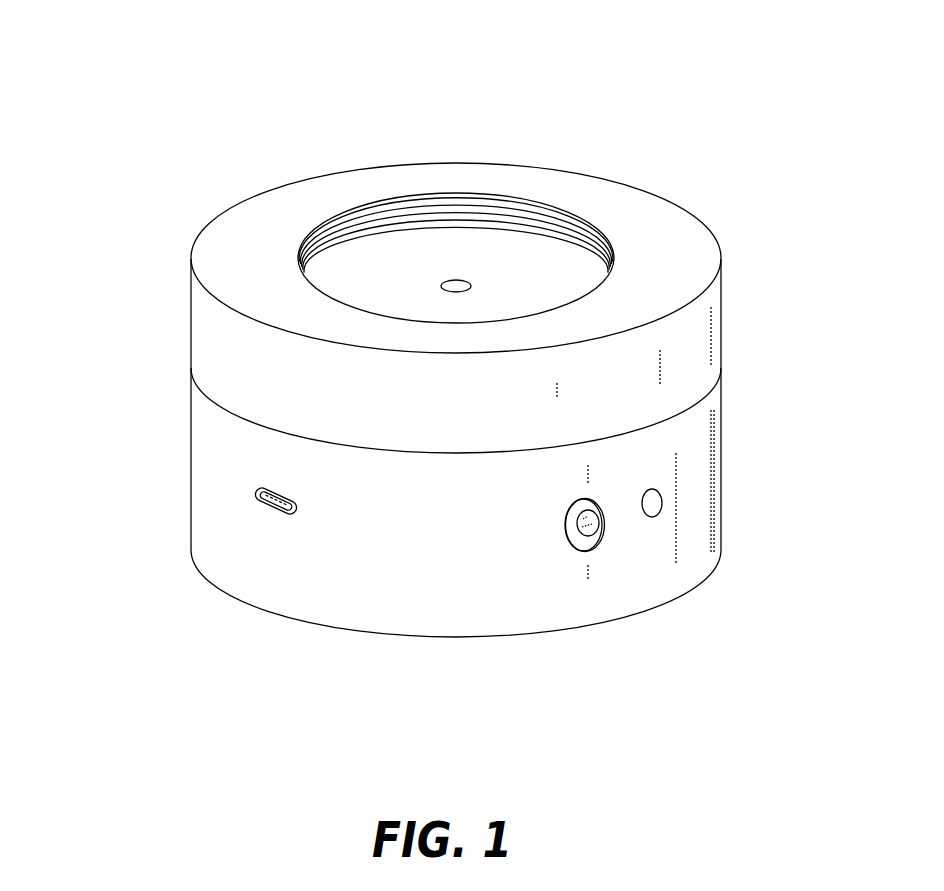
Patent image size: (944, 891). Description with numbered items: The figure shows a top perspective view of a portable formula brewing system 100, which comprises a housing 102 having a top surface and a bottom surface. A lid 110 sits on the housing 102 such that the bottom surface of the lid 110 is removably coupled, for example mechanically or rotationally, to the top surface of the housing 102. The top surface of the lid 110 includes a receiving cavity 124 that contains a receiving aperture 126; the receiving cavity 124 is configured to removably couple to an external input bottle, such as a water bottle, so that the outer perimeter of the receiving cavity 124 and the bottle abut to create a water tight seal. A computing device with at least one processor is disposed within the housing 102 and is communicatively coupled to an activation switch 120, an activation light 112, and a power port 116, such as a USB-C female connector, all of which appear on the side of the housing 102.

The device 100 is at (155, 66).
The lower housing portion 102 is at (212, 448).
The upper housing portion 110 is at (213, 324).
The indicator hole 112 is at (656, 501).
The USB port 116 is at (262, 498).
The button 120 is at (592, 523).
The threaded bore 124 is at (333, 240).
The center hole 126 is at (455, 282).